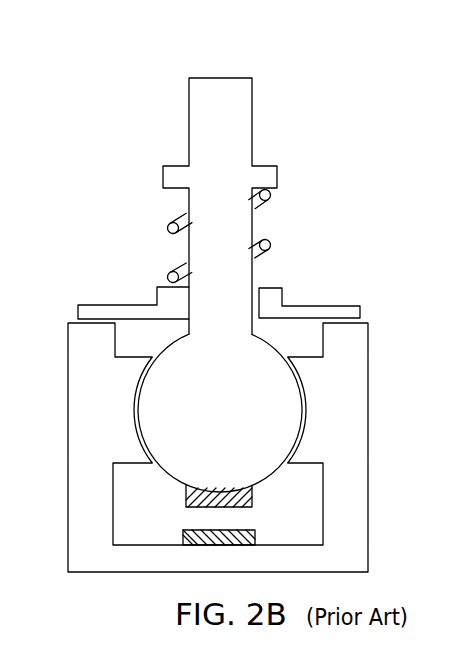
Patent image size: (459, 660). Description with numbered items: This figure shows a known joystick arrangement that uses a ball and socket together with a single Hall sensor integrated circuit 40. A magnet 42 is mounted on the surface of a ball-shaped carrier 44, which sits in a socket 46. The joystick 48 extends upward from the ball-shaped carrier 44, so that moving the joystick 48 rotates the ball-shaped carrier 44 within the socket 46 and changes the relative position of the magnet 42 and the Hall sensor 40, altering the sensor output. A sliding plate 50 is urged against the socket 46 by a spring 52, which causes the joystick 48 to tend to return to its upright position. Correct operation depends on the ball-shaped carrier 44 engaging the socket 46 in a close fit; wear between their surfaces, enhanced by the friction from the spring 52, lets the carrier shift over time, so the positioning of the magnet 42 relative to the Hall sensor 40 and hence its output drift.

The Hall sensor integrated circuit 40 is at (255, 532).
The magnet 42 is at (185, 500).
The ball-shaped carrier 44 is at (220, 413).
The socket 46 is at (337, 398).
The joystick 48 is at (253, 118).
The sliding plate 50 is at (318, 307).
The spring 52 is at (170, 225).